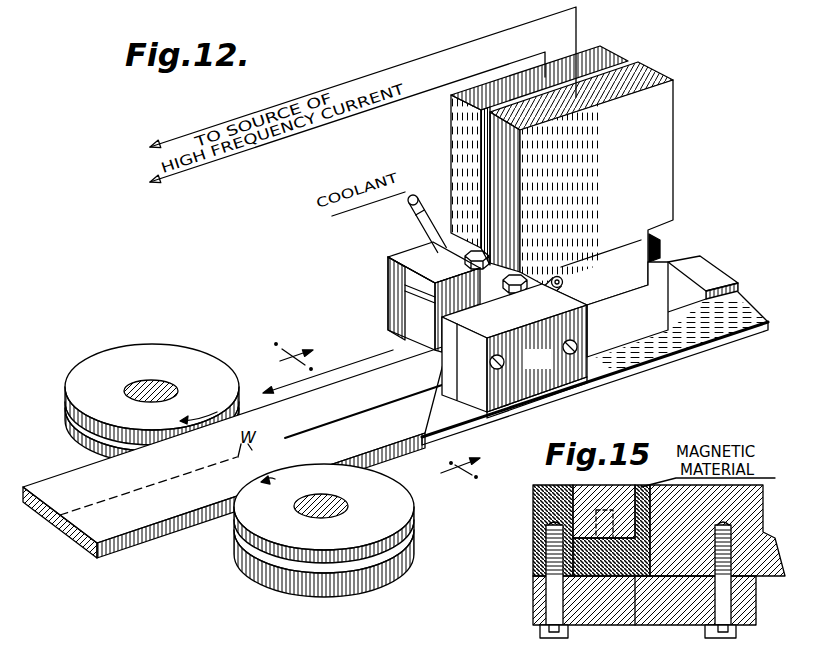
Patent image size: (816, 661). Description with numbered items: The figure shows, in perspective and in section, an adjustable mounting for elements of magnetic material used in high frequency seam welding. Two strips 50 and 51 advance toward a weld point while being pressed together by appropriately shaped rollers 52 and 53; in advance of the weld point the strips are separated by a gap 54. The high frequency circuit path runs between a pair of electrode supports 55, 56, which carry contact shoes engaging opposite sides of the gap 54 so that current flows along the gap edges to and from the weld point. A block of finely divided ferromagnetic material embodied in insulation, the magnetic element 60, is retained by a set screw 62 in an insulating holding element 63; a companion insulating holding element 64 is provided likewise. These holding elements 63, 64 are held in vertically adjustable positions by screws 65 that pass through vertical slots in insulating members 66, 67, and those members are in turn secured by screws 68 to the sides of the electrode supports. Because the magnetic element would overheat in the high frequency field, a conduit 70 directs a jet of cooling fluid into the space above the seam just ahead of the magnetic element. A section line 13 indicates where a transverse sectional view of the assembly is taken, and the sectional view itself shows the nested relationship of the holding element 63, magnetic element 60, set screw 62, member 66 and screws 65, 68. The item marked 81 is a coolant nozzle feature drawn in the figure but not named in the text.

In FIG. 12, the section line 13- 13 is at (365, 416).
In FIG. 12, the strip 50 is at (143, 521).
In FIG. 12, the strip 51 is at (55, 479).
In FIG. 12, the roller 52 is at (361, 596).
In FIG. 12, the roller 53 is at (94, 357).
In FIG. 12, the gap 54 is at (470, 424).
In FIG. 12, the electrode support 55 is at (455, 132).
In FIG. 12, the electrode support 56 is at (508, 182).
In FIG. 15, the element of magnetic material 60 is at (590, 485).
In FIG. 15, the set screw 62 is at (571, 483).
In FIG. 12, the insulating holding element 63 is at (452, 363).
In FIG. 15, the insulating holding element 63 is at (535, 515).
In FIG. 12, the insulating holding element 64 is at (396, 293).
In FIG. 12, the screw 65 is at (506, 366).
In FIG. 15, the screw 65 is at (539, 638).
In FIG. 12, the insulating member 66 is at (548, 388).
In FIG. 15, the insulating member 66 is at (607, 628).
In FIG. 12, the insulating member 67 is at (405, 257).
In FIG. 12, the screw 68 is at (588, 336).
In FIG. 15, the screw 68 is at (737, 642).
In FIG. 12, the conduit 70 is at (566, 287).
In FIG. 15, the conduit 70 is at (655, 552).
In FIG. 12, the coolant nozzle 81 is at (431, 208).